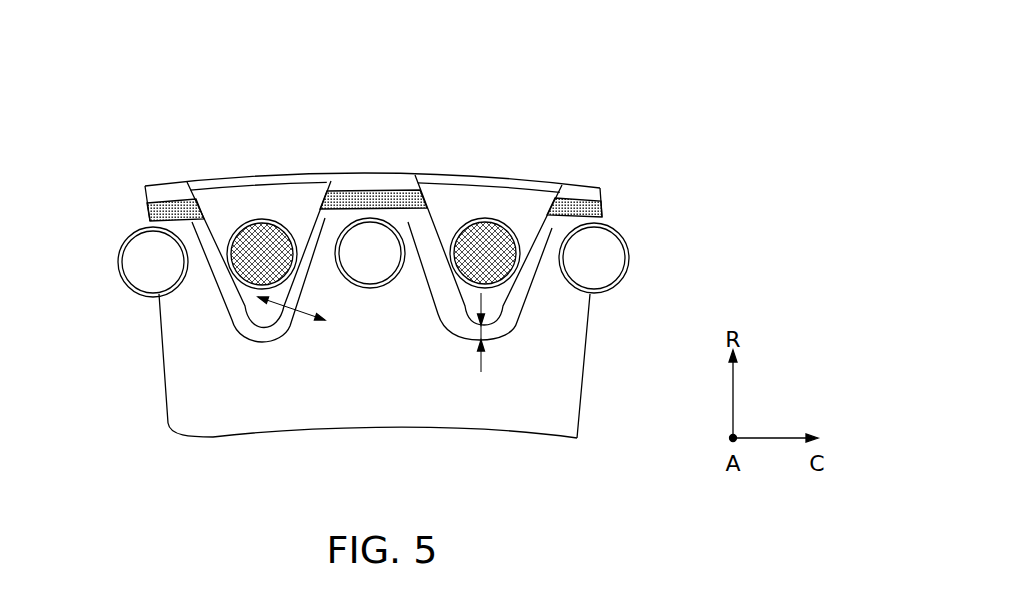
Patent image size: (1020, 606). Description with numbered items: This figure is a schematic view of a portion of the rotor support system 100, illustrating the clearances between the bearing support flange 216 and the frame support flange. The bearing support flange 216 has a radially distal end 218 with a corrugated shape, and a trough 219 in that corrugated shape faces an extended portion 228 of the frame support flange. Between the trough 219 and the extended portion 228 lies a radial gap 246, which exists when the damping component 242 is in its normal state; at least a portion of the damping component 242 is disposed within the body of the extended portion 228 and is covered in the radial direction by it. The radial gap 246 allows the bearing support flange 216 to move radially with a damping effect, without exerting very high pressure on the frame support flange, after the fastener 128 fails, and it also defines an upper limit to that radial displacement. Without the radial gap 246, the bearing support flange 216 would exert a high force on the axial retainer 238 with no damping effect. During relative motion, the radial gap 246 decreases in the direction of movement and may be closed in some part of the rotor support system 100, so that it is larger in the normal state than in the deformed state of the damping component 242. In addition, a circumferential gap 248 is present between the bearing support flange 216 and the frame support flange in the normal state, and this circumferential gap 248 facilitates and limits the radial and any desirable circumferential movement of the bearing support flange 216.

The rotor support system 100 is at (632, 52).
The fastener 128 is at (583, 275).
The bearing support flange 216 is at (568, 384).
The radially distal end 218 is at (381, 178).
The trough 219 is at (244, 335).
The extended portion 228 is at (232, 200).
The axial retainer 238 is at (268, 220).
The damping component 242 is at (602, 208).
The radial gap 246 is at (473, 333).
The circumferential gap 248 is at (322, 320).